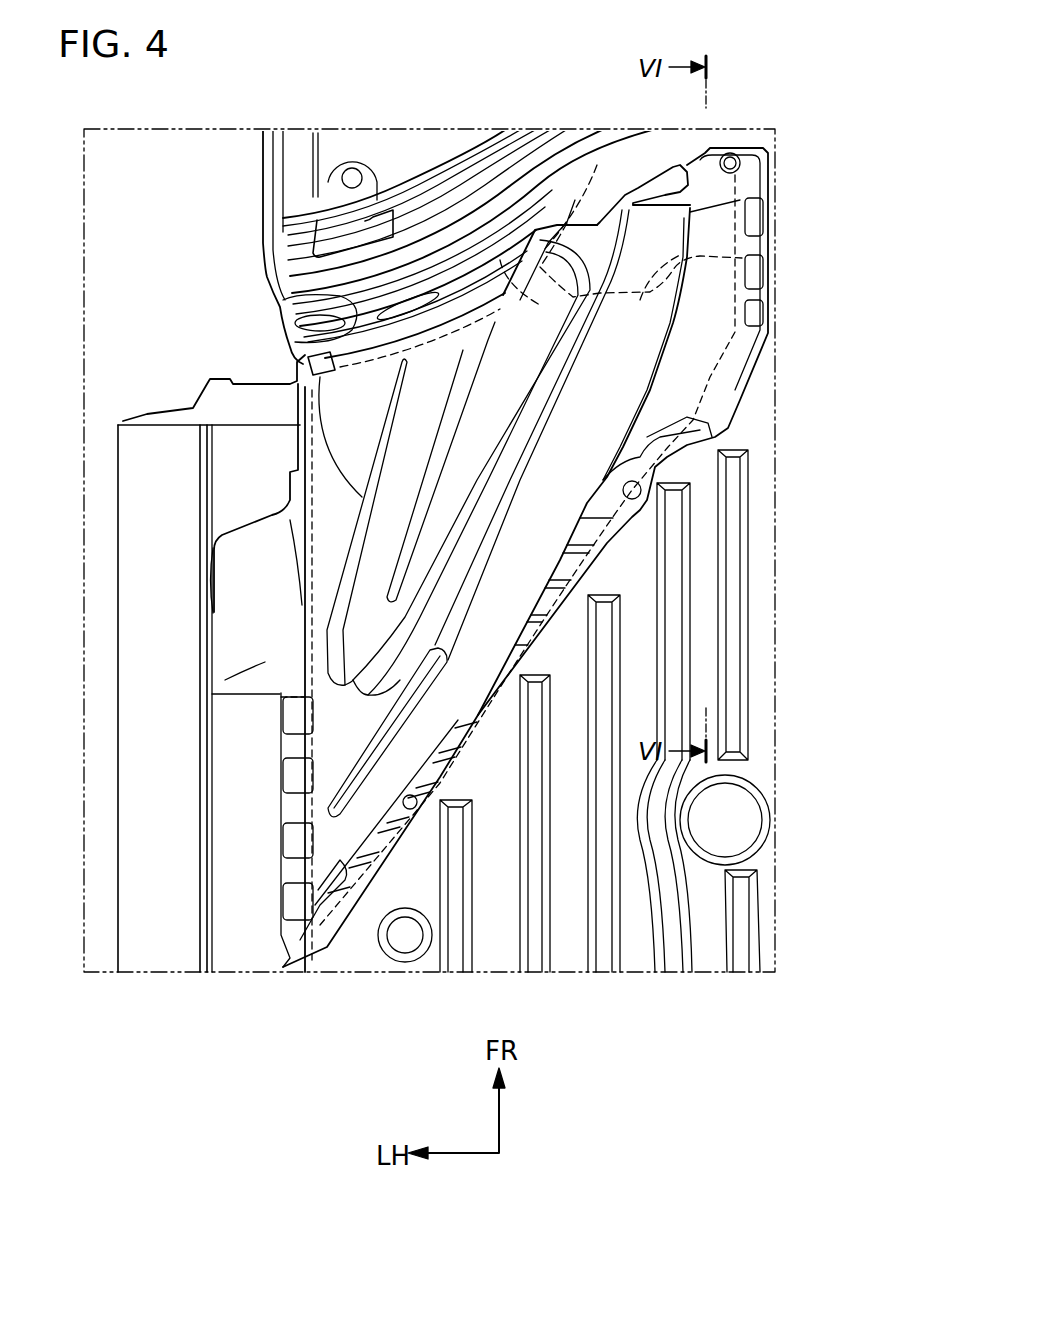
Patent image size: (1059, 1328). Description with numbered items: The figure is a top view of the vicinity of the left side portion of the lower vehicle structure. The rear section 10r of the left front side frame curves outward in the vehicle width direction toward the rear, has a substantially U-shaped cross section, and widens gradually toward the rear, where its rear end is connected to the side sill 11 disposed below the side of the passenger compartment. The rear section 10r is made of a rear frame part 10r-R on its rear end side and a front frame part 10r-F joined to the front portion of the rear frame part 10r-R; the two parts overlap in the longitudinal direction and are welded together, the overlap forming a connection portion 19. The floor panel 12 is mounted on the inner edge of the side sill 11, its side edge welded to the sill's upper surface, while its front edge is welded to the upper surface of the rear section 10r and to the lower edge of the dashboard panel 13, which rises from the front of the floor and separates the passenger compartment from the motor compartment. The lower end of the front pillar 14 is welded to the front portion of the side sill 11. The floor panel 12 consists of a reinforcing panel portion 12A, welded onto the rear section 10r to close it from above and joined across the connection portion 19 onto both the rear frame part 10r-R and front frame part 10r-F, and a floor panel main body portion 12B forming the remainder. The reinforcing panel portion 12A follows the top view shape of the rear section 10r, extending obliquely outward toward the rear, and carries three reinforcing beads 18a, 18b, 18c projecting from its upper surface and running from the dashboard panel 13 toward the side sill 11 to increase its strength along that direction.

The rear section 10r is at (745, 333).
The front frame part 10r-F is at (740, 192).
The rear frame part 10r-R is at (740, 397).
The side sill 11 is at (117, 697).
The floor panel 12 is at (641, 985).
The reinforcing panel portion 12A is at (740, 215).
The floor panel main body portion 12B is at (762, 453).
The dashboard panel 13 is at (660, 128).
The front pillar 14 is at (207, 603).
The reinforcing bead 18a is at (307, 375).
The reinforcing bead 18b is at (510, 440).
The reinforcing bead 18c is at (352, 792).
The connection portion 19 is at (742, 258).